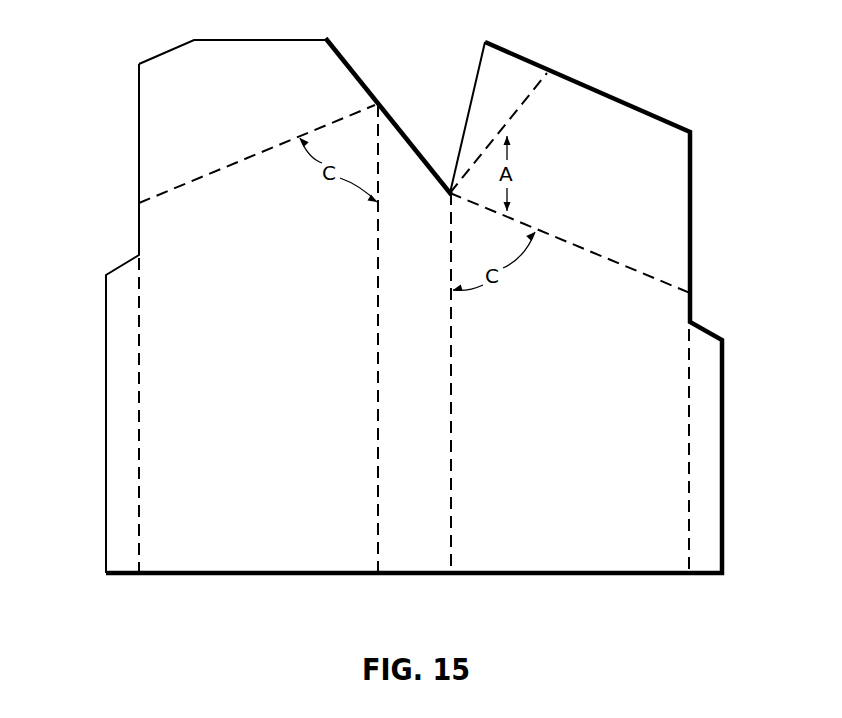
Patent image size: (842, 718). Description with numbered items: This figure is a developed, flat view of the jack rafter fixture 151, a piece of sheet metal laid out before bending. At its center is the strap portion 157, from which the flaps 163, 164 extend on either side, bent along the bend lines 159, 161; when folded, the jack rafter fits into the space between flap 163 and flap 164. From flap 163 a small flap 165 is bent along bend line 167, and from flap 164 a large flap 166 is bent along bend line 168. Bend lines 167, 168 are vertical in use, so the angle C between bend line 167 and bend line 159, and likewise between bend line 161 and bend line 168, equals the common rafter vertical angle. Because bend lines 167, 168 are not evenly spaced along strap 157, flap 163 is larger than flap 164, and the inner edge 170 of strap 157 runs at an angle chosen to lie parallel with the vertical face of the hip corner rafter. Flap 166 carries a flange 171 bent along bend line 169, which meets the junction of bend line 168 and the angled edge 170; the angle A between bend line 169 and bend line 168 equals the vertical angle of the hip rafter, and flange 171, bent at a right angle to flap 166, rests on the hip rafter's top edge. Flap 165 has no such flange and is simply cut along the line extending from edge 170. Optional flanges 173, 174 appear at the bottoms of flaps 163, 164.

The jack rafter fixture 151 is at (652, 110).
The strap portion 157 is at (427, 407).
The bend line 159 is at (377, 327).
The bend line 161 is at (452, 333).
The flap 163 is at (251, 534).
The flap 164 is at (592, 536).
The small flap 165 is at (226, 123).
The large flap 166 is at (613, 188).
The bend line 167 is at (196, 181).
The bend line 168 is at (552, 238).
The bend line 169 is at (518, 112).
The inner edge 170 is at (445, 188).
The flange 171 is at (477, 125).
The flange 173 is at (118, 477).
The flange 174 is at (705, 485).